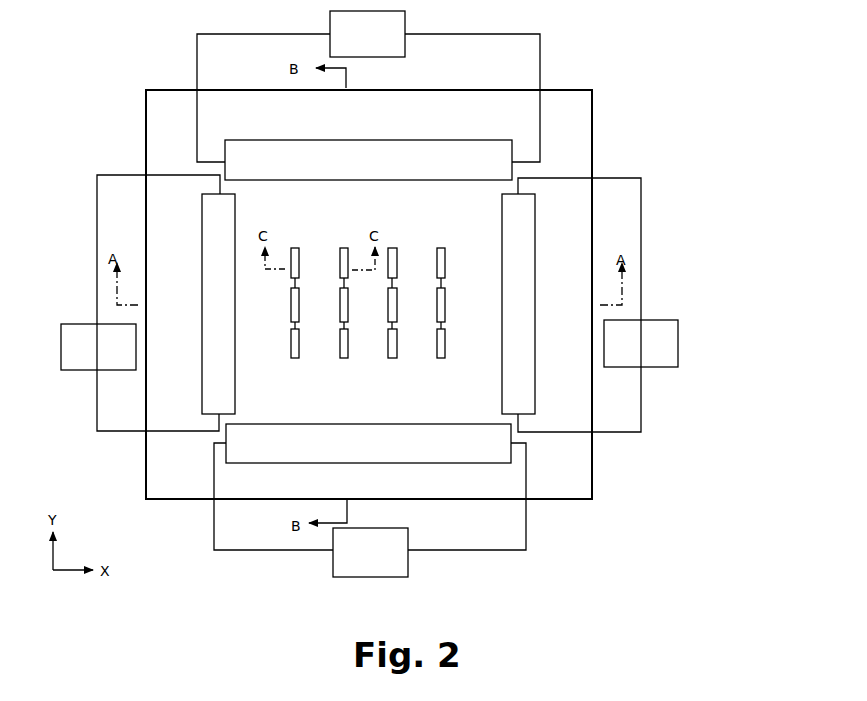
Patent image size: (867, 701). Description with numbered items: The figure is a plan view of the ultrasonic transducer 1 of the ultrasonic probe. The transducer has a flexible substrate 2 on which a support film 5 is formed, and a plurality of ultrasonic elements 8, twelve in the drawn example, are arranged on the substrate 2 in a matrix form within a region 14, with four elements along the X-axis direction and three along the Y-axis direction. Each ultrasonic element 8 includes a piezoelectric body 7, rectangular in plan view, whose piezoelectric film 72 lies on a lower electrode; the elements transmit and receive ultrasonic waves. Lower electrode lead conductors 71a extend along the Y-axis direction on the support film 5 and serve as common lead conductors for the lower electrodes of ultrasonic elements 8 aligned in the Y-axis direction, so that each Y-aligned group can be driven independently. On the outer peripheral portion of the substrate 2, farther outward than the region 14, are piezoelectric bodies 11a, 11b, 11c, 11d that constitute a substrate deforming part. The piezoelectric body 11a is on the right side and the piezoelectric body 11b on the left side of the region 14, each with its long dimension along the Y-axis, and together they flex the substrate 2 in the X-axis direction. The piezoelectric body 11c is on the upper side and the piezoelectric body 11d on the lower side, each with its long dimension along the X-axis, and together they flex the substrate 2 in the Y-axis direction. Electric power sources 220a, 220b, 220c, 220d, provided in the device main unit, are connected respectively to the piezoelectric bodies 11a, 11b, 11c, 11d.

The ultrasonic transducer 1 is at (580, 70).
The substrate 2 is at (592, 117).
The support film 5 is at (570, 150).
The piezoelectric body 7 is at (300, 262).
The ultrasonic element 8 is at (293, 246).
The piezoelectric body 11a is at (518, 240).
The piezoelectric body 11b is at (215, 225).
The piezoelectric body 11c is at (460, 160).
The piezoelectric body 11d is at (470, 455).
The region 14 is at (360, 302).
The lower electrode lead conductor 71a is at (290, 290).
The piezoelectric film 72 is at (298, 266).
The electric power source 220a is at (657, 367).
The electric power source 220b is at (72, 370).
The electric power source 220c is at (405, 22).
The electric power source 220d is at (408, 575).